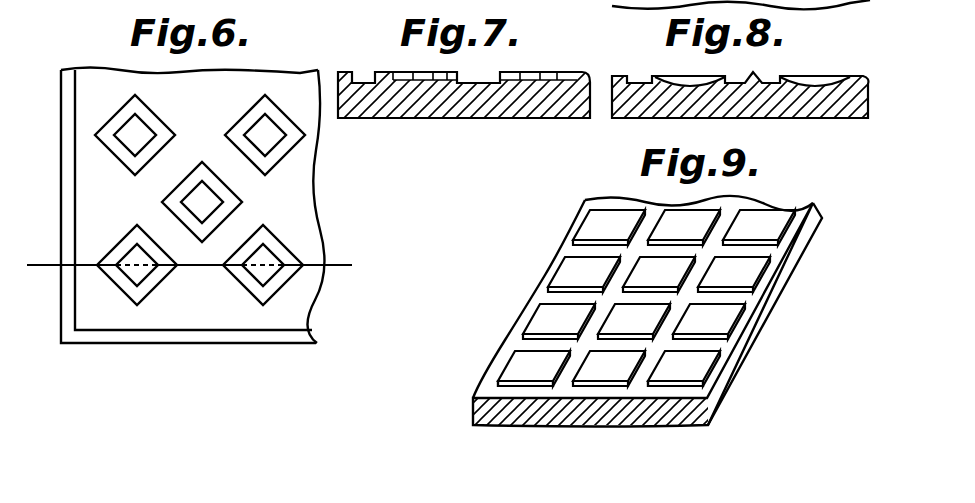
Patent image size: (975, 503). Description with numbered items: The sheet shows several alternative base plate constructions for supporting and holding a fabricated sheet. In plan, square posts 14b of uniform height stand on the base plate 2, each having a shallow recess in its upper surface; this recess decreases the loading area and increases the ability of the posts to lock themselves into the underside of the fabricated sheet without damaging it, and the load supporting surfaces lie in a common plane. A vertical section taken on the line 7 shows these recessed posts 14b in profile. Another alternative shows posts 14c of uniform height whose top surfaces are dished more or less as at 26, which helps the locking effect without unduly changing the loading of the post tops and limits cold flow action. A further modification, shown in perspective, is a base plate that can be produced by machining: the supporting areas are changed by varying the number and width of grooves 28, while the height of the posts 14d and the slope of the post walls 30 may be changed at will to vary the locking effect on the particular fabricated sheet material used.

In FIG. 6, the substrate plate 2 is at (321, 305).
In FIG. 6, the section line 7— 7 is at (36, 276).
In FIG. 6, the square posts 14b is at (243, 128).
In FIG. 7, the square posts 14b is at (458, 76).
In FIG. 8, the posts 14c is at (754, 72).
In FIG. 9, the posts 14d is at (717, 322).
In FIG. 8, the dished top surface 26 is at (678, 78).
In FIG. 9, the grooves 28 is at (762, 252).
In FIG. 9, the post walls 30 is at (513, 389).